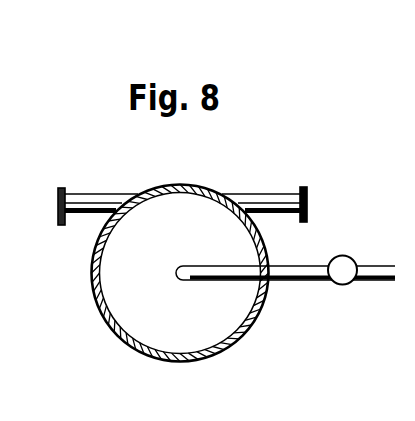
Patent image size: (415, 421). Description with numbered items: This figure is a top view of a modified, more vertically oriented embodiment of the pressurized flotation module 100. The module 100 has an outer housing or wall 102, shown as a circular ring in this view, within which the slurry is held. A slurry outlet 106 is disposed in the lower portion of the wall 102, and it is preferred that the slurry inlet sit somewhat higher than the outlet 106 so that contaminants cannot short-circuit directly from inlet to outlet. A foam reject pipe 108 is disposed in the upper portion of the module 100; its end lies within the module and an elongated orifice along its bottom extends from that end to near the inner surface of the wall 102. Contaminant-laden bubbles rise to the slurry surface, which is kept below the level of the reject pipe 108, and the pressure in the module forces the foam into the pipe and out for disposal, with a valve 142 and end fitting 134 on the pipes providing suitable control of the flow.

The module 100 is at (114, 337).
The outer housing or wall 102 is at (238, 194).
The slurry outlet 106 is at (90, 203).
The foam reject pipe 108 is at (288, 280).
The right end closure of tube 134 is at (283, 200).
The valve 142 is at (346, 285).